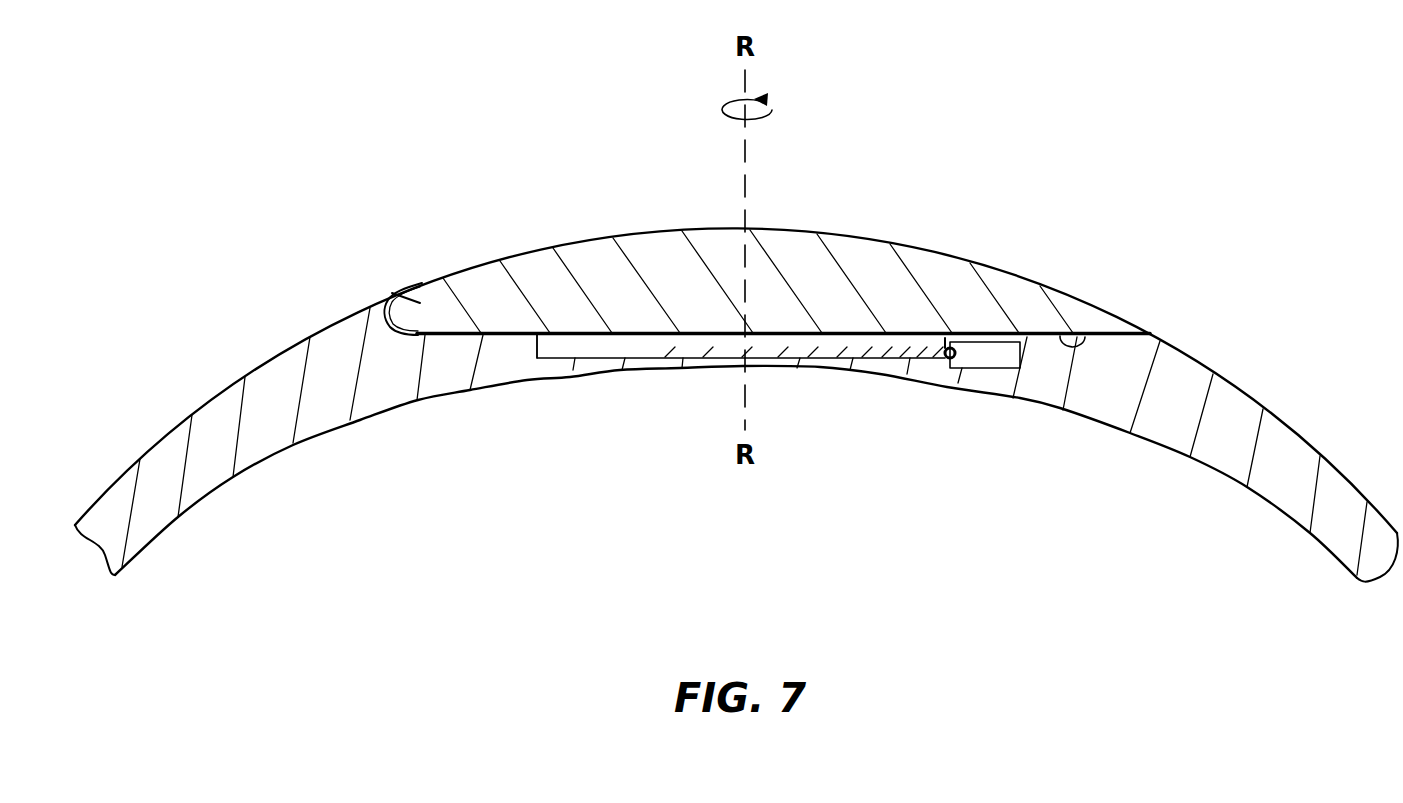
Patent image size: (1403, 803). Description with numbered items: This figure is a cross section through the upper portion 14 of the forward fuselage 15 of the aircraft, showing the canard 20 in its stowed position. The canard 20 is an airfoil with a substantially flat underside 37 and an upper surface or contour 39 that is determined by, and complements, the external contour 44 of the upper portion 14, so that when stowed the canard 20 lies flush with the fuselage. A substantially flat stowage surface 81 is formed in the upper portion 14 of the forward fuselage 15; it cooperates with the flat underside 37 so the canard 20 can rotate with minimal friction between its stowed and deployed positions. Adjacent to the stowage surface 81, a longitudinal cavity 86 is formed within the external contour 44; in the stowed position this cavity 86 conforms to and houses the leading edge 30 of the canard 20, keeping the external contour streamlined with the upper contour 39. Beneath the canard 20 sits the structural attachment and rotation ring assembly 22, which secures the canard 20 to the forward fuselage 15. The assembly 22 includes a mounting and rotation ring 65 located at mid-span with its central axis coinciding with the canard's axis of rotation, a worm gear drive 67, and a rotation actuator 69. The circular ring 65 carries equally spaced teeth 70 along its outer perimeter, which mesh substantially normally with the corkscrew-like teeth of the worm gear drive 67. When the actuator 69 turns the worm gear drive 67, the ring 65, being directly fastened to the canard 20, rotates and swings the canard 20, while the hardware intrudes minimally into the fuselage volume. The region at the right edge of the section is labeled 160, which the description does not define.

The upper portion 14 is at (1247, 407).
The forward fuselage 15 is at (220, 394).
The canard 20 is at (675, 263).
The structural attachment and rotation ring assembly 22 is at (927, 378).
The leading edge 30 is at (395, 298).
The flat underside 37 is at (497, 336).
The upper surface or contour 39 is at (803, 230).
The external contour 44 is at (110, 485).
The mounting and rotation ring 65 is at (662, 362).
The worm gear drive 67 is at (945, 363).
The rotation actuator 69 is at (1000, 353).
The teeth 70 is at (858, 368).
The stowage surface 81 is at (1085, 337).
The longitudinal cavity 86 is at (386, 325).
The rim 160 is at (1327, 558).